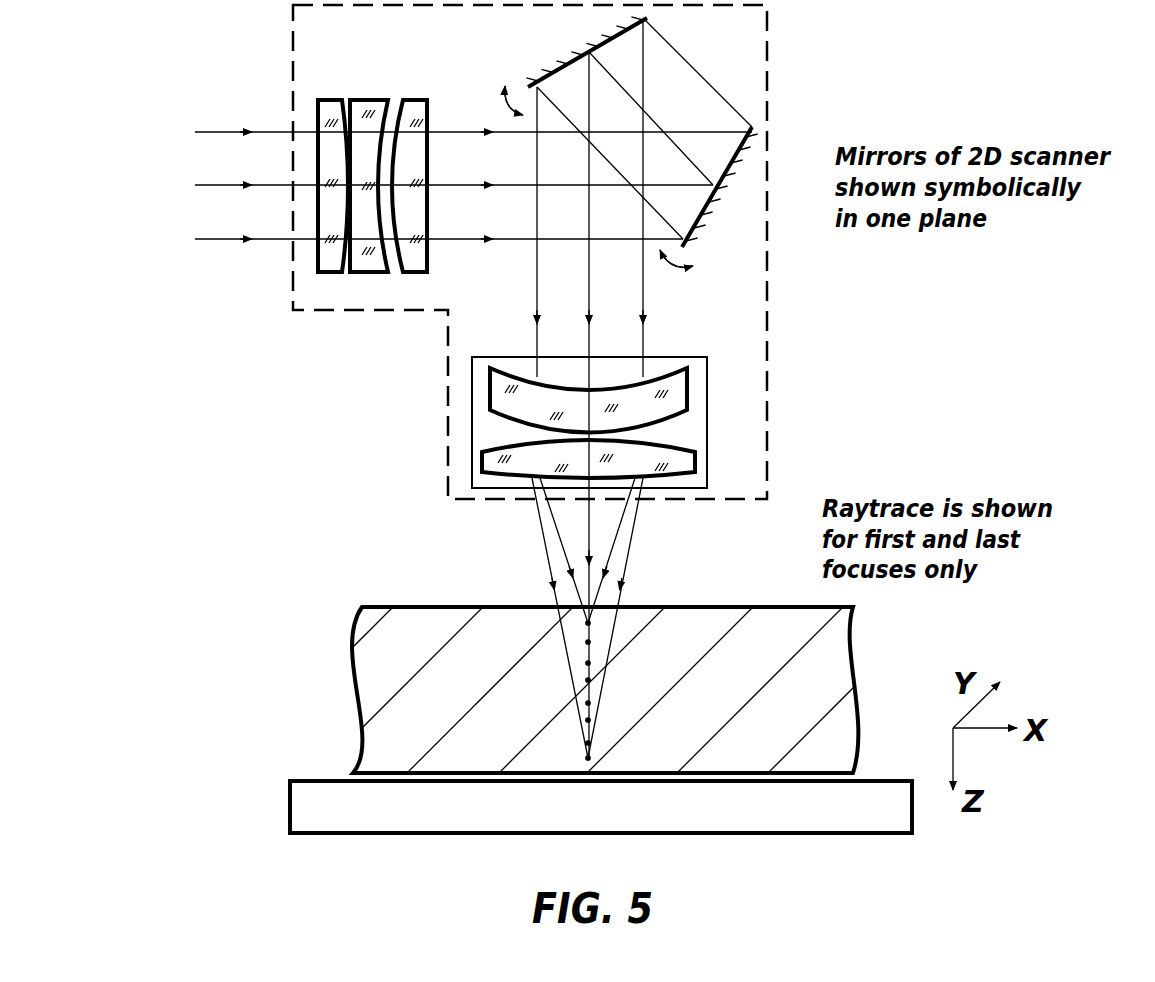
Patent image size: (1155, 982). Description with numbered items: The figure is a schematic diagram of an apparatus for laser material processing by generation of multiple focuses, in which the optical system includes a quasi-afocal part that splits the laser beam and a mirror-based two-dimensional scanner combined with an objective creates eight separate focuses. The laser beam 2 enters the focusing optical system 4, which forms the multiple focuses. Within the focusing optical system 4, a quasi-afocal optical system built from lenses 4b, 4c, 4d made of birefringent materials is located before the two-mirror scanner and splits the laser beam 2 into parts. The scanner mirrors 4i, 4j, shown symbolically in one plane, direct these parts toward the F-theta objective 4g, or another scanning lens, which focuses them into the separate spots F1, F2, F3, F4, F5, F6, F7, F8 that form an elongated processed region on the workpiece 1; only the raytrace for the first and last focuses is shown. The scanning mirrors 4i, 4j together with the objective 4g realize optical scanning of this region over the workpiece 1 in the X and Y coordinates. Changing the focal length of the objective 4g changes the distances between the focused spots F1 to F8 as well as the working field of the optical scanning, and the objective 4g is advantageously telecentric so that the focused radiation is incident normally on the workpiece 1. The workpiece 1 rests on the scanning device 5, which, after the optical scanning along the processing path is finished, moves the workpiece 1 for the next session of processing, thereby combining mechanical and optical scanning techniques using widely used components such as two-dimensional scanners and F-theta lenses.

The workpiece 1 is at (353, 665).
The laser beam 2 is at (243, 260).
The focusing optical system 4 is at (447, 453).
The birefringent lens 4b is at (328, 280).
The birefringent lens 4c is at (368, 280).
The birefringent lens 4d is at (413, 280).
The F-theta objective 4g is at (707, 398).
The scanner mirror 4i is at (752, 127).
The scanner mirror 4j is at (647, 18).
The scanning device 5 is at (288, 800).
The focused spot F1 is at (590, 623).
The focused spot F2 is at (586, 642).
The focused spot F3 is at (590, 663).
The focused spot F4 is at (586, 680).
The focused spot F5 is at (590, 703).
The focused spot F6 is at (586, 720).
The focused spot F7 is at (590, 743).
The focused spot F8 is at (586, 758).